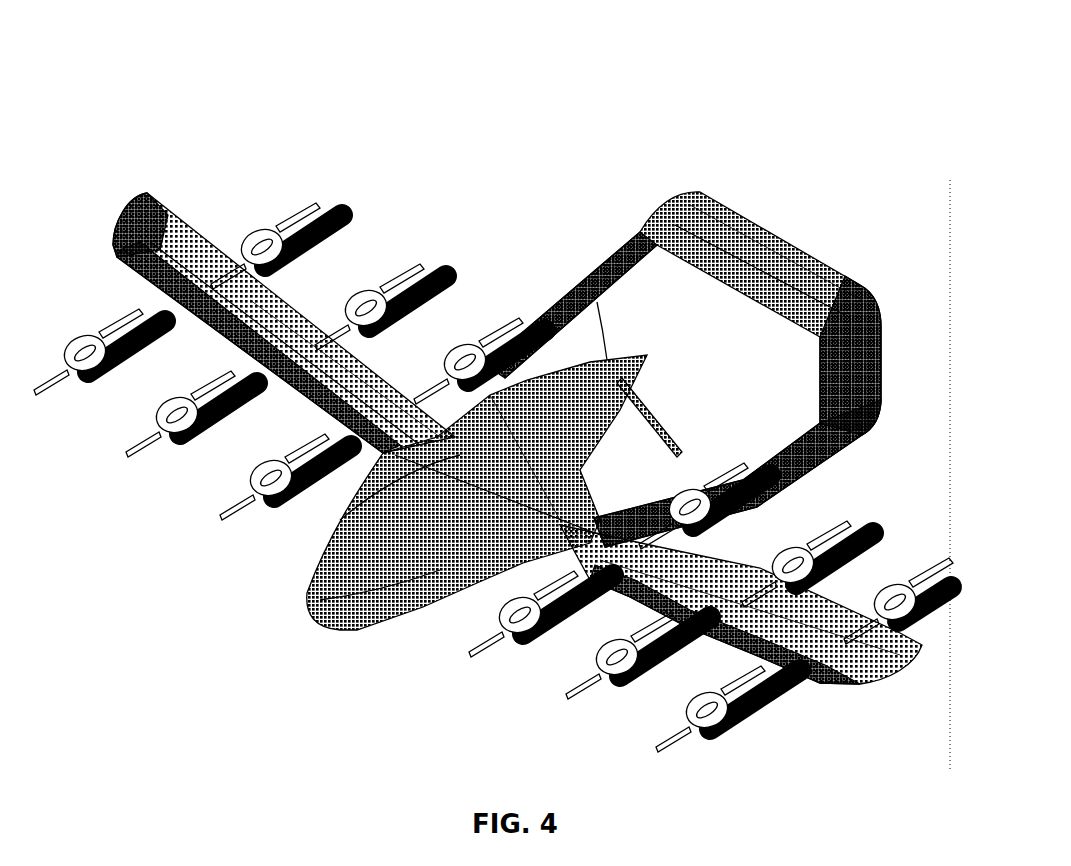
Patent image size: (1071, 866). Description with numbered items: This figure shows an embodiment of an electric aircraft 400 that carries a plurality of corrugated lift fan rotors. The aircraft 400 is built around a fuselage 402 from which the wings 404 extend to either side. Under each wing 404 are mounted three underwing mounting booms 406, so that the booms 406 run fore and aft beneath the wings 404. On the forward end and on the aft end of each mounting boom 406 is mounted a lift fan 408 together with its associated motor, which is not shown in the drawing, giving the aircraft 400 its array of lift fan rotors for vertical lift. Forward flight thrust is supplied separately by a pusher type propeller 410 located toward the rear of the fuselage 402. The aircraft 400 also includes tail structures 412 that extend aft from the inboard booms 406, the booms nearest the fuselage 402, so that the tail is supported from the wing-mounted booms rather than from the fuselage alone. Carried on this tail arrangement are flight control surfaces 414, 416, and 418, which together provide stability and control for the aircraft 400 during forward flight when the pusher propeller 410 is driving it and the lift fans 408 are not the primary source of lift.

The aircraft 400 is at (136, 62).
The fuselage 402 is at (380, 632).
The wings 404 is at (118, 233).
The underwing mounting booms 406 is at (312, 257).
The lift fan 408 is at (268, 233).
The pusher type propeller 410 is at (655, 422).
The tail structures 412 is at (832, 460).
The flight control surface 414 is at (385, 380).
The flight control surface 416 is at (808, 266).
The flight control surface 418 is at (875, 343).